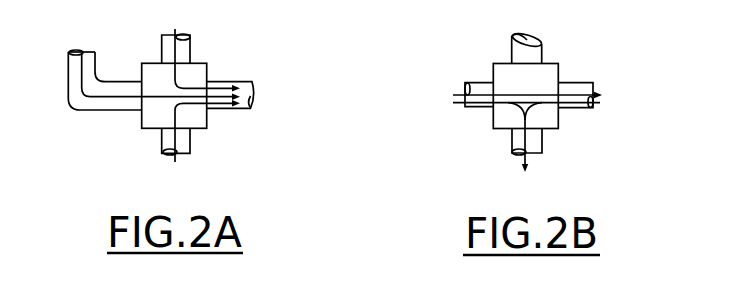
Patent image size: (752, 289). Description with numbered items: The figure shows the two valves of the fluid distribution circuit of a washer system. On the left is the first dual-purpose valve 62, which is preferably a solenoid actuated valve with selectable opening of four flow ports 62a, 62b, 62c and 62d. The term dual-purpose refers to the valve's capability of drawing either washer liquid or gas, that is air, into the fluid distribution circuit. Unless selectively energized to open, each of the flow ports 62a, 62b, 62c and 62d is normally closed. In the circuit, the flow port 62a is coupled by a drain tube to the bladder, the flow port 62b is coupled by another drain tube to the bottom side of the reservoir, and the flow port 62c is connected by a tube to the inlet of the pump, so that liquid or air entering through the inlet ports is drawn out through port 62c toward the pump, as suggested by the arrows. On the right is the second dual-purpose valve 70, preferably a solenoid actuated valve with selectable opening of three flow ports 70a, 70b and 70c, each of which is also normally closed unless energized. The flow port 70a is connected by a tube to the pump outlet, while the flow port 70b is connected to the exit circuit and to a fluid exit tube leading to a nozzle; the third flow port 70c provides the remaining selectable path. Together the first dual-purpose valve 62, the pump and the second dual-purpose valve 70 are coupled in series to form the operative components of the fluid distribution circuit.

In FIG. 2A, the first dual-purpose valve 62 is at (104, 129).
In FIG. 2A, the flow port 62a is at (82, 50).
In FIG. 2A, the flow port 62b is at (187, 35).
In FIG. 2A, the flow port 62c is at (250, 80).
In FIG. 2A, the flow port 62d is at (188, 145).
In FIG. 2B, the second dual-purpose valve 70 is at (648, 86).
In FIG. 2B, the flow port 70a is at (472, 80).
In FIG. 2B, the flow port 70b is at (588, 82).
In FIG. 2B, the flow port 70c is at (543, 152).